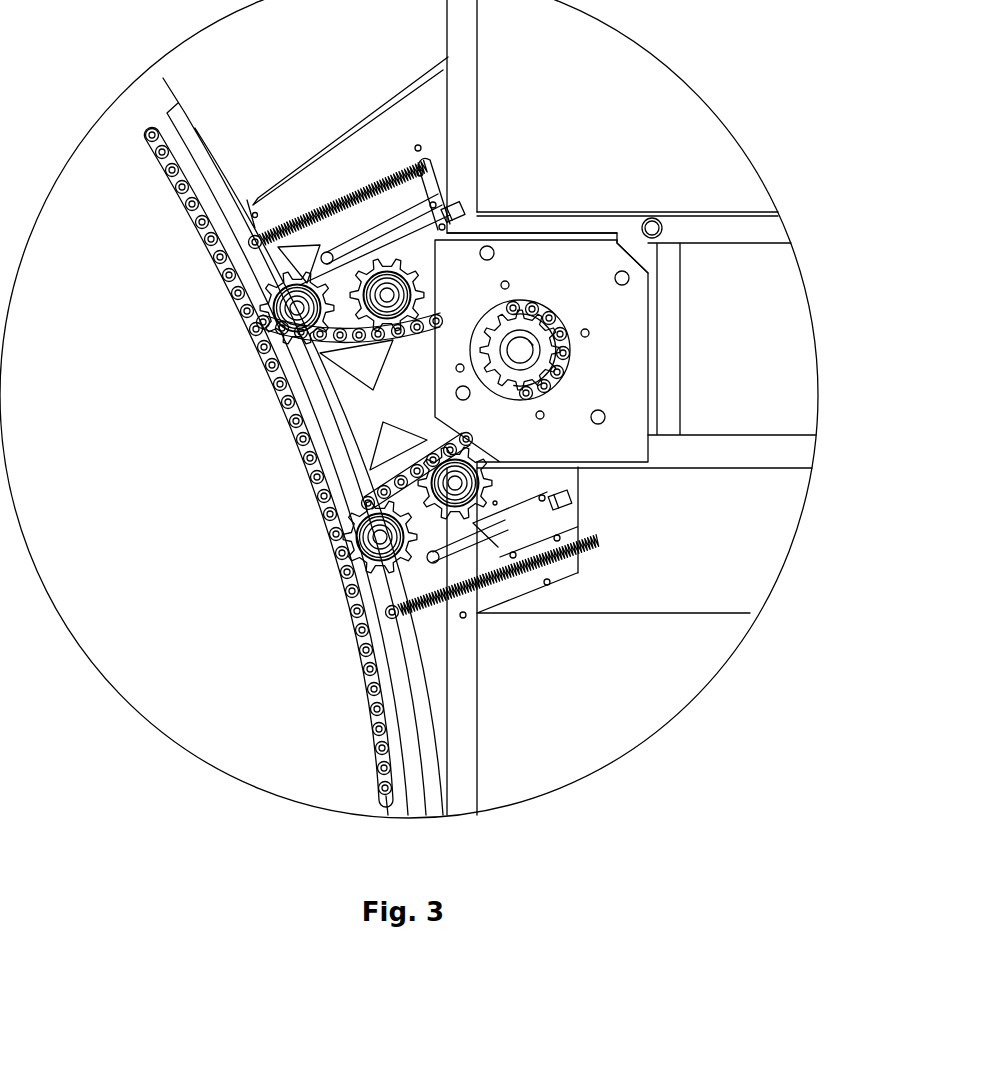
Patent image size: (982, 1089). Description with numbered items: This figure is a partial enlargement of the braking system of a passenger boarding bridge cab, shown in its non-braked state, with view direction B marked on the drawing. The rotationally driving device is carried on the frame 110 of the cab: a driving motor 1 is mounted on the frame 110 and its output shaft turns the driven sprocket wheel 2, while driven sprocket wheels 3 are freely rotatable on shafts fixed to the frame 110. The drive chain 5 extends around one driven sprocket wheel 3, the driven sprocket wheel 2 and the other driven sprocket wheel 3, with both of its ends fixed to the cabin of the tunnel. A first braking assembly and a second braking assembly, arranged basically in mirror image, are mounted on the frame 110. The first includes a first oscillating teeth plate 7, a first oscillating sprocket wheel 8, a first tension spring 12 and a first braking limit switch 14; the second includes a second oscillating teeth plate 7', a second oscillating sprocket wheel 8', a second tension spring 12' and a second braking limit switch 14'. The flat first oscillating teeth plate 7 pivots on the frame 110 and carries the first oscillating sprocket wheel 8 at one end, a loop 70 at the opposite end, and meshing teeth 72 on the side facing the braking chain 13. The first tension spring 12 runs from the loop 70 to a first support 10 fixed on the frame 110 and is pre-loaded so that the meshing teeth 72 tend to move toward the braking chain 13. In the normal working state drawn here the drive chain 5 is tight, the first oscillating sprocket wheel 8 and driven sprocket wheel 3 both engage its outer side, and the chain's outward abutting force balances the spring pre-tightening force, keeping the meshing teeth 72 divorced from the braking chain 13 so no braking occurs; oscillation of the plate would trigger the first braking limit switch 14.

The driving motor 1 is at (637, 347).
The driven sprocket wheel 2 is at (528, 328).
The driven sprocket wheel 3 is at (275, 332).
The drive chain 5 is at (200, 235).
The first oscillating teeth plate 7 is at (363, 498).
The second oscillating teeth plate 7' is at (327, 383).
The first oscillating sprocket wheel 8 is at (508, 468).
The second oscillating sprocket wheel 8' is at (382, 191).
The first support 10 is at (548, 560).
The first tension spring 12 is at (493, 604).
The second tension spring 12' is at (355, 183).
The braking chain 13 is at (310, 463).
The first braking limit switch 14 is at (610, 521).
The second braking limit switch 14' is at (506, 185).
The loop 70 is at (258, 212).
The meshing teeth 72 is at (358, 398).
The frame 110 is at (748, 222).
The view direction B is at (497, 472).